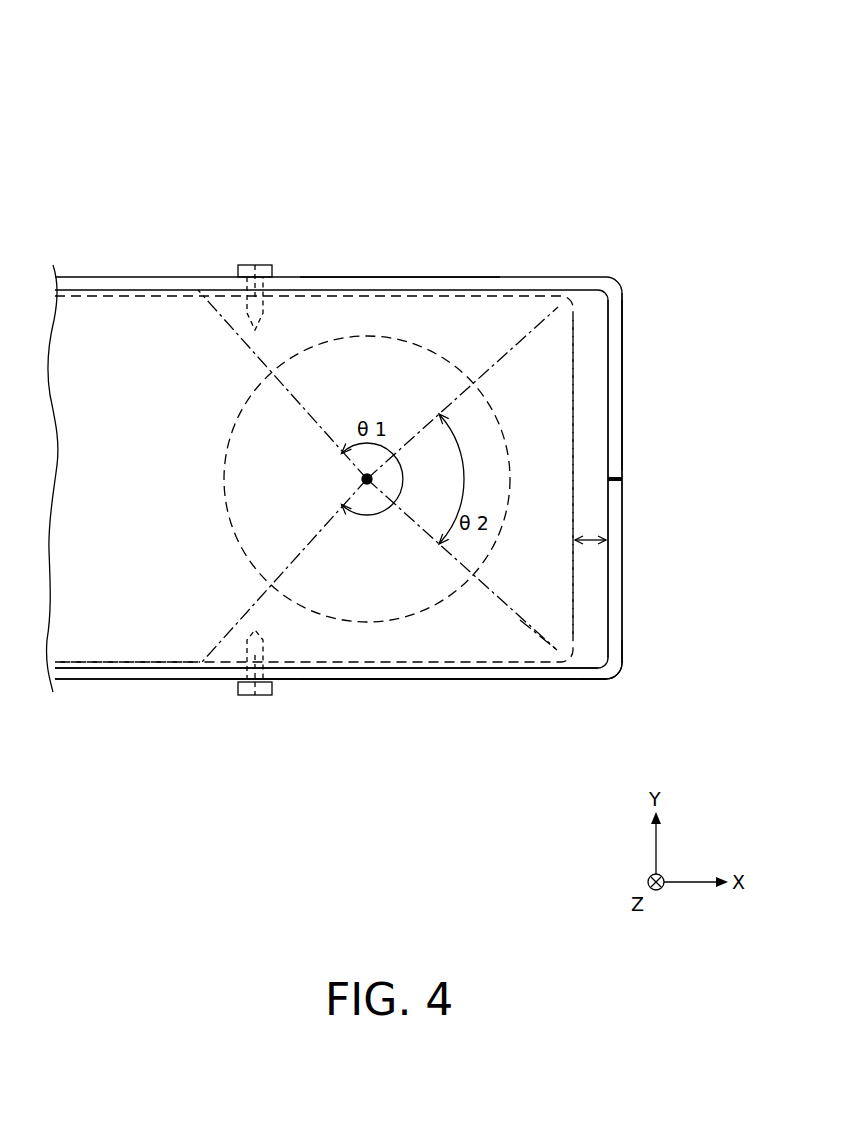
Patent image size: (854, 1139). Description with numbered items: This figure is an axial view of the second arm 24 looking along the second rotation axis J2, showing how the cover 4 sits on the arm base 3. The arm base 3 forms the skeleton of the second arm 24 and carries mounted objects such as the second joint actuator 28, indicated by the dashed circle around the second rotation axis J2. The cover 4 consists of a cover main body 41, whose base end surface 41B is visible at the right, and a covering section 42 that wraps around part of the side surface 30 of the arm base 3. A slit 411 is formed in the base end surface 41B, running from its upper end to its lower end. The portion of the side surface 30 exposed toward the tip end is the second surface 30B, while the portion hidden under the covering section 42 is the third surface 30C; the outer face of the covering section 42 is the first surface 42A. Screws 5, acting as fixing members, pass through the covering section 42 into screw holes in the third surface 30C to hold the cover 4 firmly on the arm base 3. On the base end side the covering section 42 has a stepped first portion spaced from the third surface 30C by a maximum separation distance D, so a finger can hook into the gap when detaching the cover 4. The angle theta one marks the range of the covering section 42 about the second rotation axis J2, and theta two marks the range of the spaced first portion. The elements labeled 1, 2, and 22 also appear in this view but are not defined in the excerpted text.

The robot system 1 is at (623, 98).
The robot 2 is at (550, 218).
The arm base 3 is at (530, 640).
The cover 4 is at (342, 277).
The screw 5 is at (255, 272).
The second arm 22 is at (660, 683).
The second arm 24 is at (401, 275).
The second joint actuator 28 is at (433, 605).
The side surface 30 is at (478, 296).
The second surface 30B is at (108, 663).
The third surface 30C is at (573, 372).
The cover main body 41 is at (622, 508).
The base end surface 41B is at (622, 322).
The slit 411 is at (622, 479).
The covering section 42 is at (622, 625).
The first surface 42A is at (302, 680).
The maximum separation distance D is at (590, 542).
The second rotation axis J2 is at (368, 485).